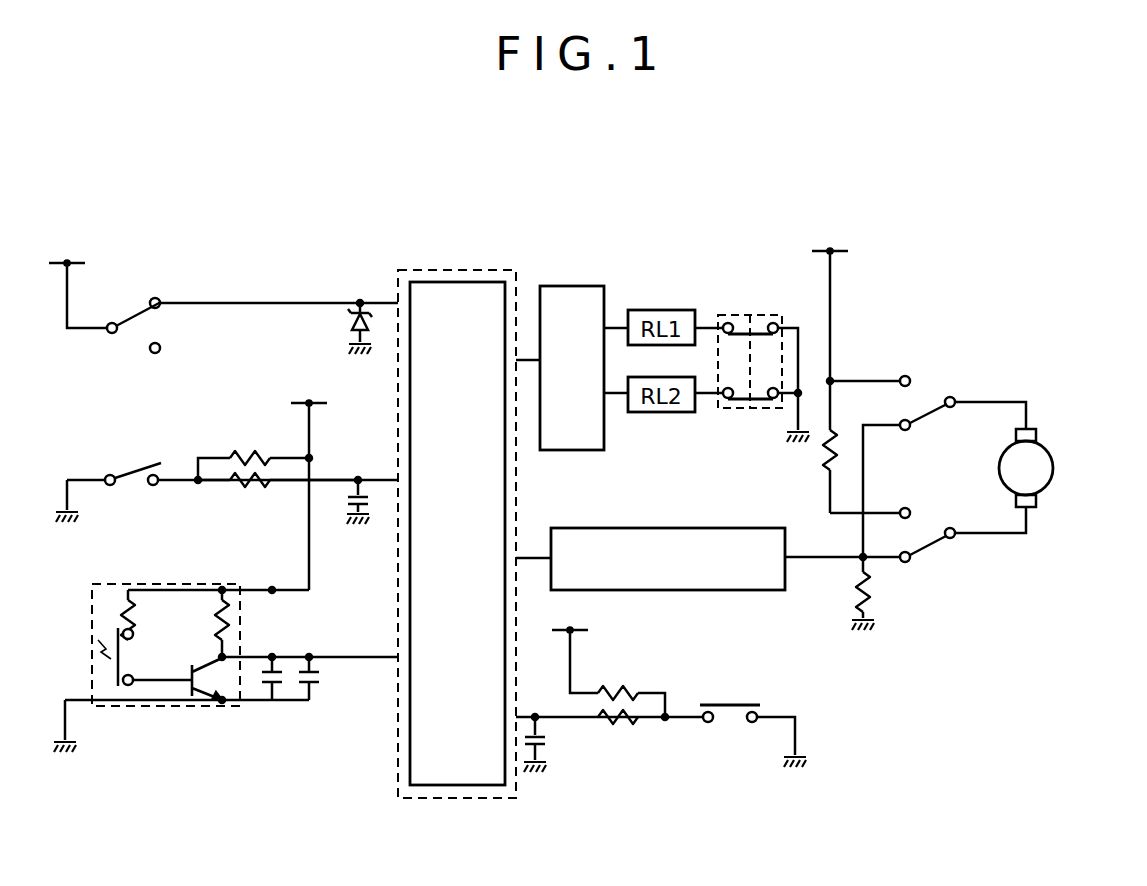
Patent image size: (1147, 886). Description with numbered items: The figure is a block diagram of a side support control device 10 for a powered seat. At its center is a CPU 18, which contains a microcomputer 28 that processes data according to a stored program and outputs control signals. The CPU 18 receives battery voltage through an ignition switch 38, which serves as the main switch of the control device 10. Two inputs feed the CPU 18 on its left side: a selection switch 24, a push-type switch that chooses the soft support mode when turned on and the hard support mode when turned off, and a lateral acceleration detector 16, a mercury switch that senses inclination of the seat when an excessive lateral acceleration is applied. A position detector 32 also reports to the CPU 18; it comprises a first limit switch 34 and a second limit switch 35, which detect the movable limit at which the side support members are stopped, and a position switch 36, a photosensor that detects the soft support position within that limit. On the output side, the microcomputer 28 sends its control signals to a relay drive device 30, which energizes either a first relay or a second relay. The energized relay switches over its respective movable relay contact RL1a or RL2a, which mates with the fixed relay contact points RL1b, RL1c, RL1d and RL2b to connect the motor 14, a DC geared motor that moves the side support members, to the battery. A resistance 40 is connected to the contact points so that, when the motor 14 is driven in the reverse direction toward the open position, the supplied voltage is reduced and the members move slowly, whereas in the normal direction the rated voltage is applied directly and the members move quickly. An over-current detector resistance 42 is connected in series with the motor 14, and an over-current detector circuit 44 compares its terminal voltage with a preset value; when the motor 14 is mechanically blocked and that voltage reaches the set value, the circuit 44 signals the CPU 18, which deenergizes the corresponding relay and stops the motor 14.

The side support control device 10 is at (812, 168).
The motor 14 is at (1054, 457).
The lateral acceleration detector 16 is at (756, 691).
The CPU 18 is at (510, 800).
The selection switch 24 is at (136, 459).
The microcomputer 28 is at (422, 783).
The relay drive device 30 is at (592, 286).
The position detector 32 is at (113, 583).
The first limit switch 34 is at (745, 321).
The second limit switch 35 is at (745, 410).
The position switch 36 is at (108, 684).
The ignition switch 38 is at (135, 323).
The resistance 40 is at (822, 455).
The over-current detector resistance 42 is at (850, 595).
The over-current detector circuit 44 is at (683, 528).
The relay contact RL1a is at (926, 405).
The relay contact RL1b is at (912, 375).
The relay contact RL1c is at (911, 431).
The relay contact RL1d is at (908, 563).
The relay contact RL2a is at (927, 545).
The relay contact RL2b is at (912, 508).